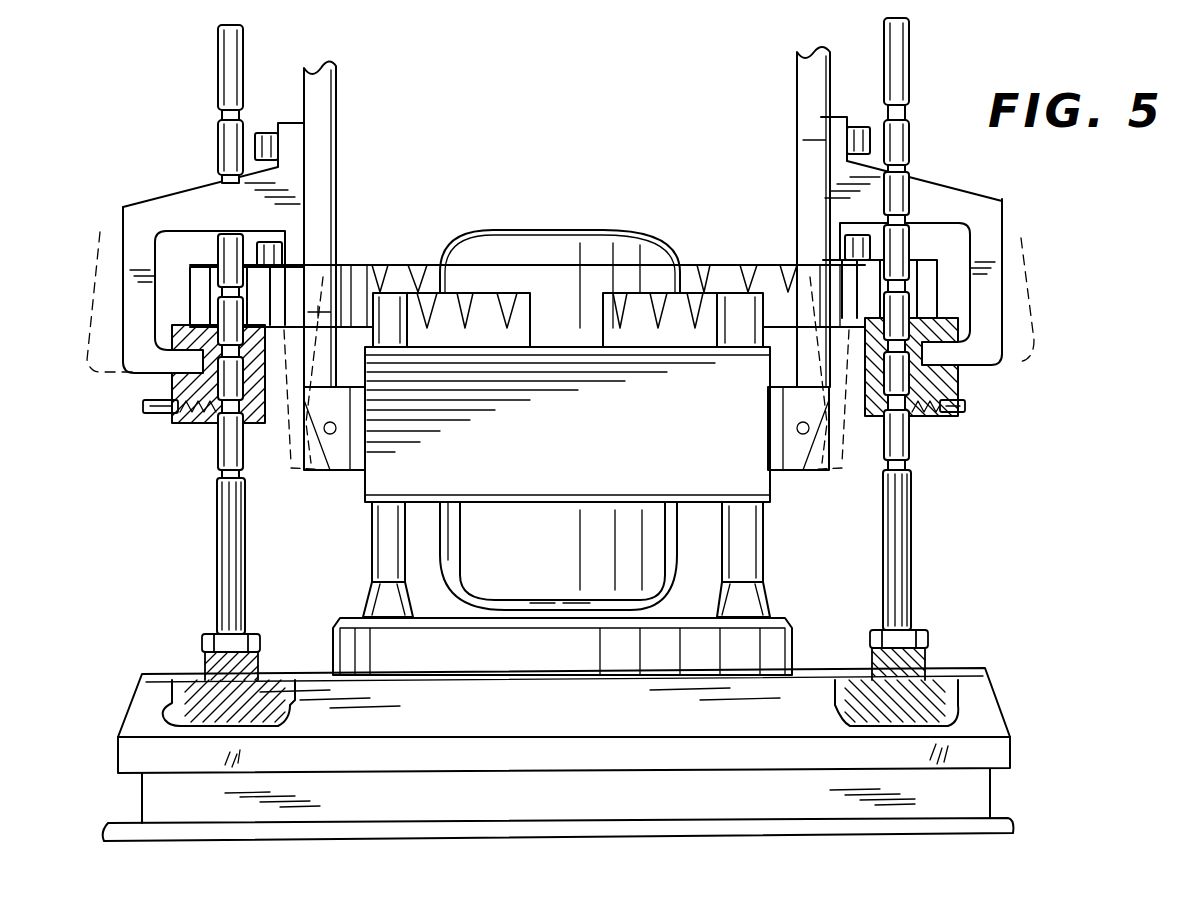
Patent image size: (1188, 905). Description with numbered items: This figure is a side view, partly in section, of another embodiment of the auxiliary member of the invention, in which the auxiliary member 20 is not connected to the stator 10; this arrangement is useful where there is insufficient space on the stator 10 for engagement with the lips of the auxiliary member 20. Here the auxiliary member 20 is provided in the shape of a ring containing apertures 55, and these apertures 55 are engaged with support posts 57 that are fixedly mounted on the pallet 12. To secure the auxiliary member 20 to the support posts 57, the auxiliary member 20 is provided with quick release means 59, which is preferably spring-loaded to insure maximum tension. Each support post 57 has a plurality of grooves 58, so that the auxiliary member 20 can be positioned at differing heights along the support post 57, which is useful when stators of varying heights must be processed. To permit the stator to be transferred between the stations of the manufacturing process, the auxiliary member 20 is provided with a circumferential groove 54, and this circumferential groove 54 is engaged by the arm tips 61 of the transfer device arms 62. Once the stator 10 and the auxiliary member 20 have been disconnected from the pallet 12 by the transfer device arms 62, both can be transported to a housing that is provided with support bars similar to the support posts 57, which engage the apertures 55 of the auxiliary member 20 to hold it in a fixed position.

The stator 10 is at (603, 367).
The pallet 12 is at (980, 695).
The auxiliary member 20 is at (177, 385).
The circumferential groove 54 is at (955, 330).
The apertures 55 is at (912, 412).
The support posts 57 is at (220, 77).
The grooves 58 is at (222, 118).
The quick release means 59 is at (158, 413).
The arm tips 61 is at (135, 369).
The transfer device arms 62 is at (330, 101).